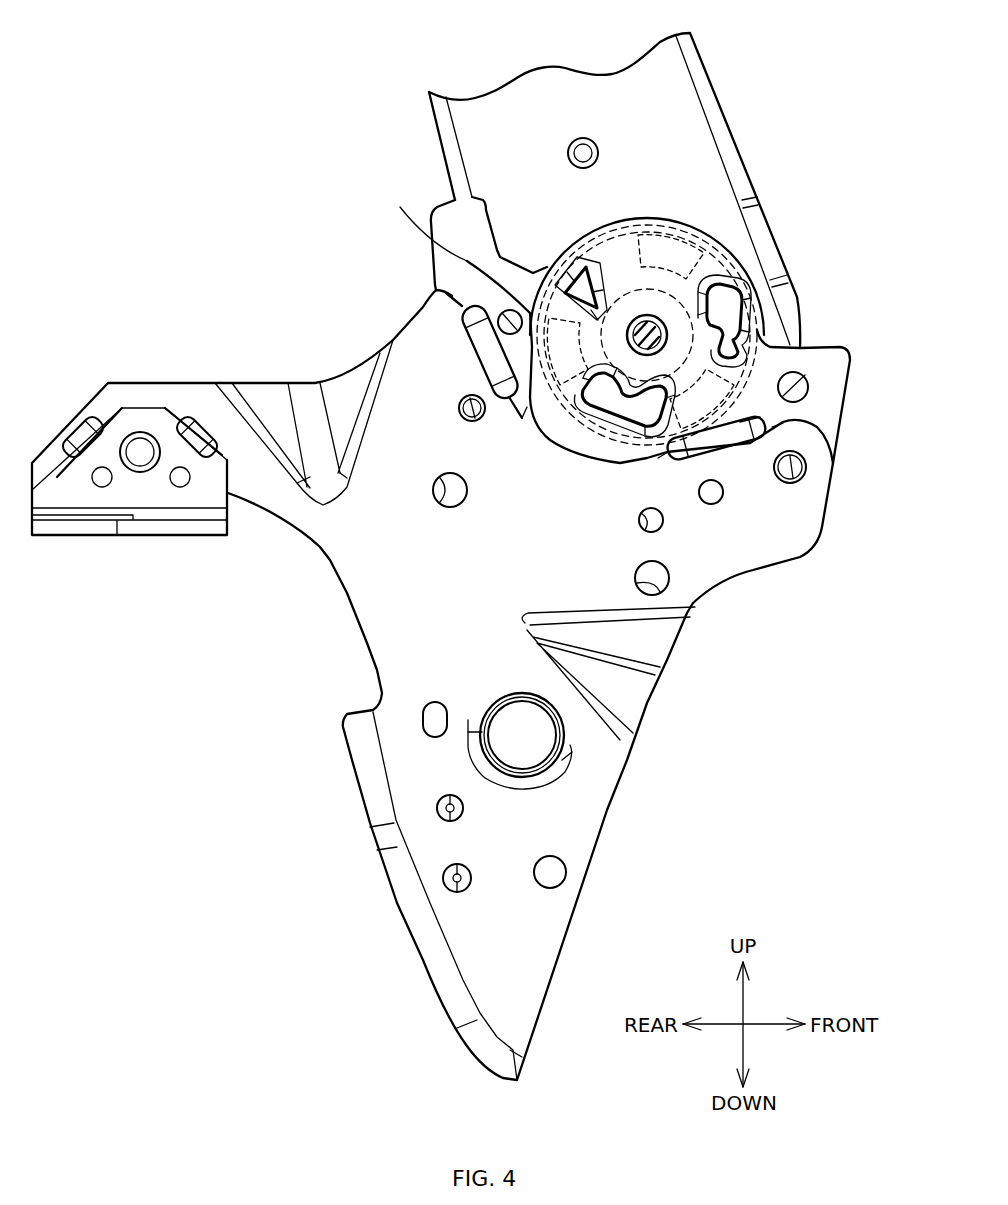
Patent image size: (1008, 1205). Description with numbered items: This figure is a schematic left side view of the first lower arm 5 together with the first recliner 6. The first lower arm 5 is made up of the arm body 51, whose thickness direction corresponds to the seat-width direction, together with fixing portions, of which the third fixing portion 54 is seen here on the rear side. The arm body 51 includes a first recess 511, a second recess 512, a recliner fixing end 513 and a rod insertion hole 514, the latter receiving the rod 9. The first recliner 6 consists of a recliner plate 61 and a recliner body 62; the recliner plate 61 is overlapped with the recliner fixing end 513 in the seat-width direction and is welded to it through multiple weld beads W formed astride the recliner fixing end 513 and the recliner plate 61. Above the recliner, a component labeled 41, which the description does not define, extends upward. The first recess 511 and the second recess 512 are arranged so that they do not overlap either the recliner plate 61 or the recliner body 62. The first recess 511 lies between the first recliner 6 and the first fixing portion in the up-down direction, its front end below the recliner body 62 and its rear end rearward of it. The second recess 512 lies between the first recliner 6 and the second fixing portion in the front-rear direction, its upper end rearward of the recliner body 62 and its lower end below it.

The first lower arm 5 is at (196, 326).
The arm body 51 is at (397, 582).
The first recess 511 is at (665, 675).
The second recess 512 is at (309, 382).
The recliner fixing end 513 is at (400, 207).
The rod insertion hole 514 is at (525, 703).
The third fixing portion 54 is at (98, 522).
The back frame side plate 41 is at (673, 108).
The first recliner 6 is at (808, 292).
The recliner plate 61 is at (823, 397).
The recliner body 62 is at (697, 237).
The rod 9 is at (565, 732).
The weld beads W is at (478, 344).